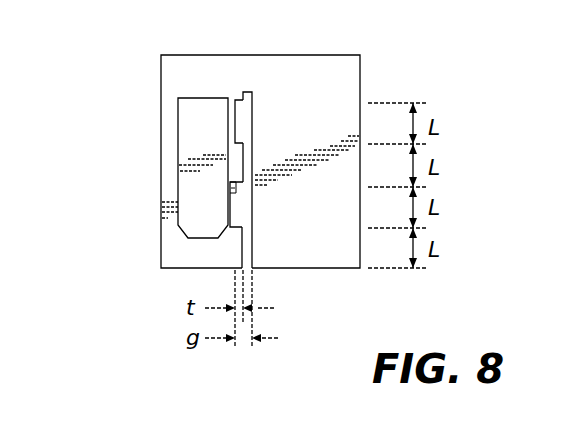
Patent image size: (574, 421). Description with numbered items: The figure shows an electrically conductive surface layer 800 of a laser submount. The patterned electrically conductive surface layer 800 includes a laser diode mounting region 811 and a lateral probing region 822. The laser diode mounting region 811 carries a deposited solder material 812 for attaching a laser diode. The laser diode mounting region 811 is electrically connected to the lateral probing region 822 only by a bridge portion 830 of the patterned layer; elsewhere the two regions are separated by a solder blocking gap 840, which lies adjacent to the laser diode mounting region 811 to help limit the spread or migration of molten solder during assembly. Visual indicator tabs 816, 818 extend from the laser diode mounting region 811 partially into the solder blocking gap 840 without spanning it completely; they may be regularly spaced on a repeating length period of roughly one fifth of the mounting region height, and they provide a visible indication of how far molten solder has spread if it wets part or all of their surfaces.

The electrically conductive surface layer 800 is at (98, 73).
The laser diode mounting region 811 is at (180, 253).
The deposited solder material 812 is at (193, 142).
The visual indicator tab 816 is at (235, 158).
The visual indicator tab 818 is at (242, 248).
The lateral probing region 822 is at (312, 240).
The bridge portion 830 is at (245, 70).
The solder blocking gap 840 is at (247, 118).